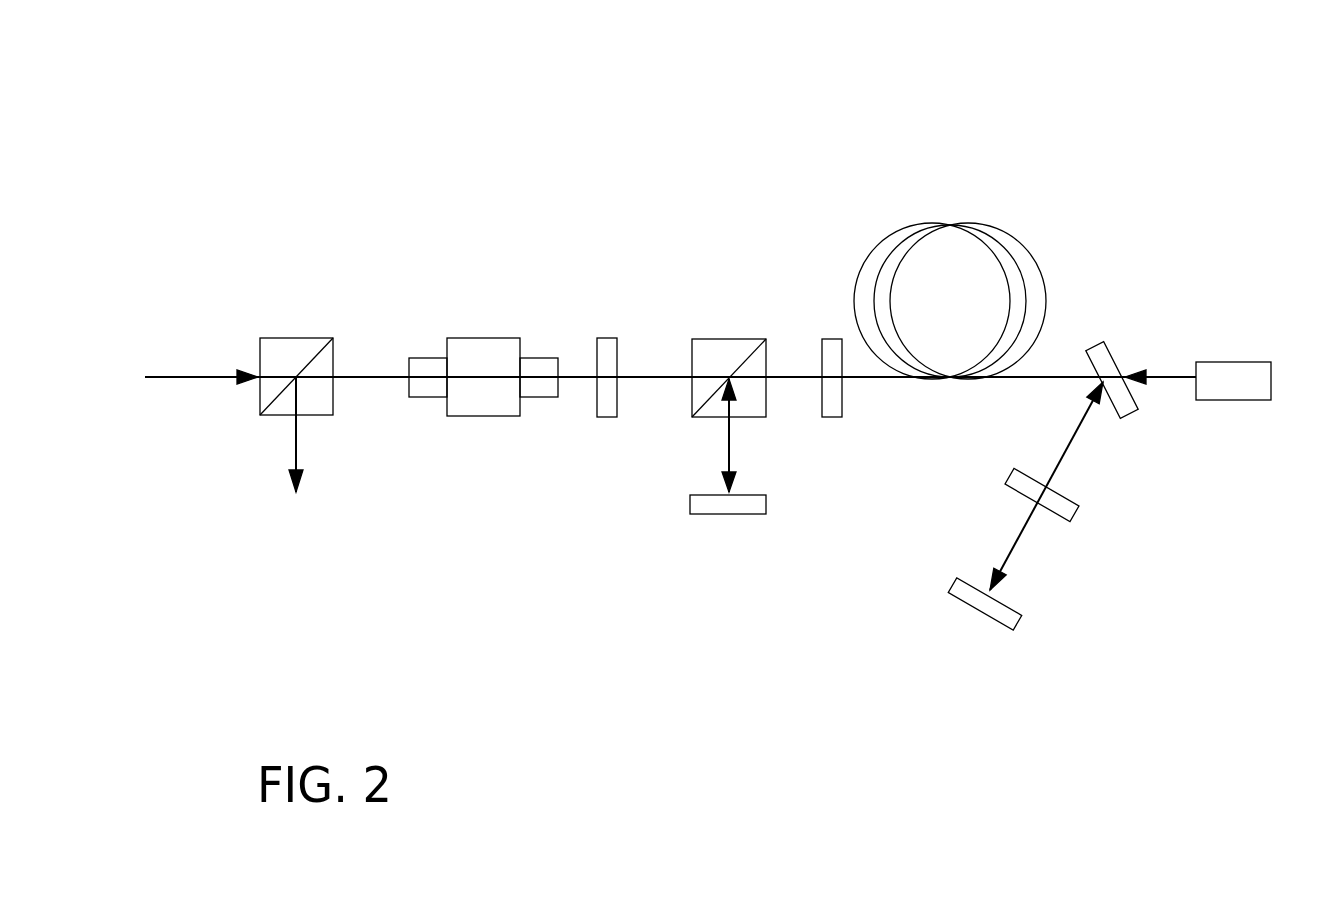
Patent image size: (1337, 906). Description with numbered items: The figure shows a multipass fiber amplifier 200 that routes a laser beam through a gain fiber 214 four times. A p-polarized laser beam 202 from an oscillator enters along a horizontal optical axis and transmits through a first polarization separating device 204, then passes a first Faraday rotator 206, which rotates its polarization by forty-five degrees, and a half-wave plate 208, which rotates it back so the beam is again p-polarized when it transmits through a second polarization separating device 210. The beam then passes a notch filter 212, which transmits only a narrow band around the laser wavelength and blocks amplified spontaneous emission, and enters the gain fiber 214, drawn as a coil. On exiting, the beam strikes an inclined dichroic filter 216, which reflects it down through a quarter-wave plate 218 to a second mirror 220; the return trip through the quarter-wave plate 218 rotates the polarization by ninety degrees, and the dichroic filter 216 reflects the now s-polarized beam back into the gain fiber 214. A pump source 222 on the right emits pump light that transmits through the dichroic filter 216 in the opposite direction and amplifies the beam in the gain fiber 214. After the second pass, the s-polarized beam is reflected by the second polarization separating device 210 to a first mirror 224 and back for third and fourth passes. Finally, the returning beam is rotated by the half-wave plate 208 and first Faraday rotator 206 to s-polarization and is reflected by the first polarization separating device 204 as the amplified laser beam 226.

The multipass fiber amplifier 200 is at (369, 95).
The p-polarized laser beam 202 is at (185, 375).
The first polarization separating device 204 is at (317, 337).
The first Faraday rotator 206 is at (503, 337).
The half-wave plate 208 is at (607, 337).
The second polarization separating device 210 is at (710, 339).
The notch filter 212 is at (842, 398).
The gain fiber 214 is at (1040, 280).
The dichroic filter 216 is at (1108, 346).
The quarter-wave plate 218 is at (1077, 515).
The second mirror 220 is at (1012, 622).
The pump source 222 is at (1253, 362).
The first mirror 224 is at (766, 505).
The amplified laser beam 226 is at (297, 450).